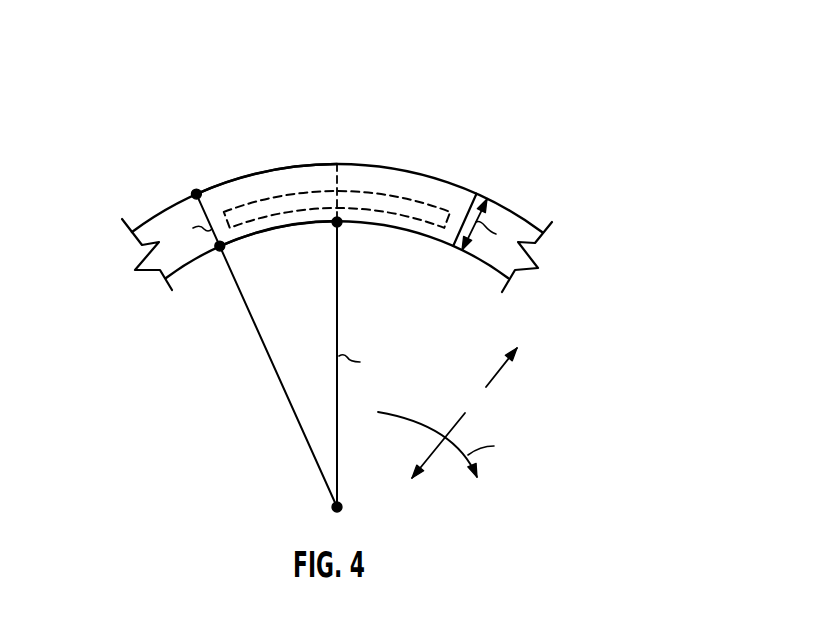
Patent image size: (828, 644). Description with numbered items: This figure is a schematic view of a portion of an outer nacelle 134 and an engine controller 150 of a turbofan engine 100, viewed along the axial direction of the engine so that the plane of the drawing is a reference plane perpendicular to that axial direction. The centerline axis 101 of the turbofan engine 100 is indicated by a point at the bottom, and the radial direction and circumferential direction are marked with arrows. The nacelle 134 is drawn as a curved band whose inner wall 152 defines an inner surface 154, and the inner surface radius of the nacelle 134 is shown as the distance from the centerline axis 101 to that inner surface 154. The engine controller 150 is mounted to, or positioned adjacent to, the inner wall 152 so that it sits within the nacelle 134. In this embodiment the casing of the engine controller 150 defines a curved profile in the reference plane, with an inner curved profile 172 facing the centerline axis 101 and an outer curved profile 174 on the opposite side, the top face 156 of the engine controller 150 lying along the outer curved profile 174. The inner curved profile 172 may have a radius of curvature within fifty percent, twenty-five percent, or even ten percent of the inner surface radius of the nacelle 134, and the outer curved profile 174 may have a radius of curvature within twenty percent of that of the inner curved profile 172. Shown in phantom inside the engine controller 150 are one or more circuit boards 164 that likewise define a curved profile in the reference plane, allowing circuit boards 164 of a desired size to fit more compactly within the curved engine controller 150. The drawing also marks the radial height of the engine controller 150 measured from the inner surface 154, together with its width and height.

The turbofan engine 100 is at (567, 106).
The centerline axis 101 is at (331, 508).
The outer nacelle 134 is at (517, 224).
The engine controller 150 is at (427, 190).
The inner wall 152 is at (455, 248).
The inner surface 154 is at (402, 234).
The top face 156 is at (253, 174).
The circuit boards 164 is at (362, 190).
The inner curved profile 172 is at (280, 234).
The outer curved profile 174 is at (300, 160).